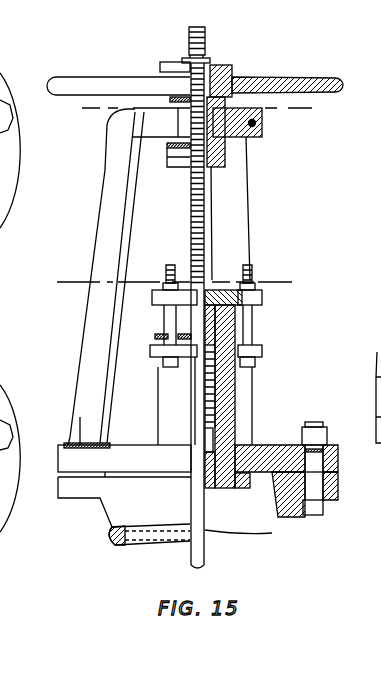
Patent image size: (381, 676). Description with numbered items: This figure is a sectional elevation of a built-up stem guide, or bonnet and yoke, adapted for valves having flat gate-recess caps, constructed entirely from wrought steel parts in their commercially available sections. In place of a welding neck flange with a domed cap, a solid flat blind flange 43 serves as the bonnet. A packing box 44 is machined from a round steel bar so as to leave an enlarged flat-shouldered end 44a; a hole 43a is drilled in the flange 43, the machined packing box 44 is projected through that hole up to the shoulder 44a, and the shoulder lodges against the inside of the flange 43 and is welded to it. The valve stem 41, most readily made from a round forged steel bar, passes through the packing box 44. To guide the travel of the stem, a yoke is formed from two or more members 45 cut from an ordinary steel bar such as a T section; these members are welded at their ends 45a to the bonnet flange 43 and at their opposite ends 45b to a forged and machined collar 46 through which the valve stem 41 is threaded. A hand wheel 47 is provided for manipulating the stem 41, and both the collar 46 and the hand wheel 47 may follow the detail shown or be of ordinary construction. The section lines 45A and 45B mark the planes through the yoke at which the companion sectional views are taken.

The valve stem 41 is at (203, 27).
The blind flange 43 is at (352, 461).
The hole 43a is at (262, 445).
The packing box 44 is at (237, 388).
The enlarged flat-shouldered end 44a is at (225, 488).
The yoke members 45 is at (97, 220).
The ends of yoke members 45a is at (80, 417).
The ends of yoke members 45b is at (137, 125).
The section line A 45A is at (172, 355).
The section line B 45B is at (195, 117).
The collar 46 is at (179, 132).
The hand wheel 47 is at (118, 77).